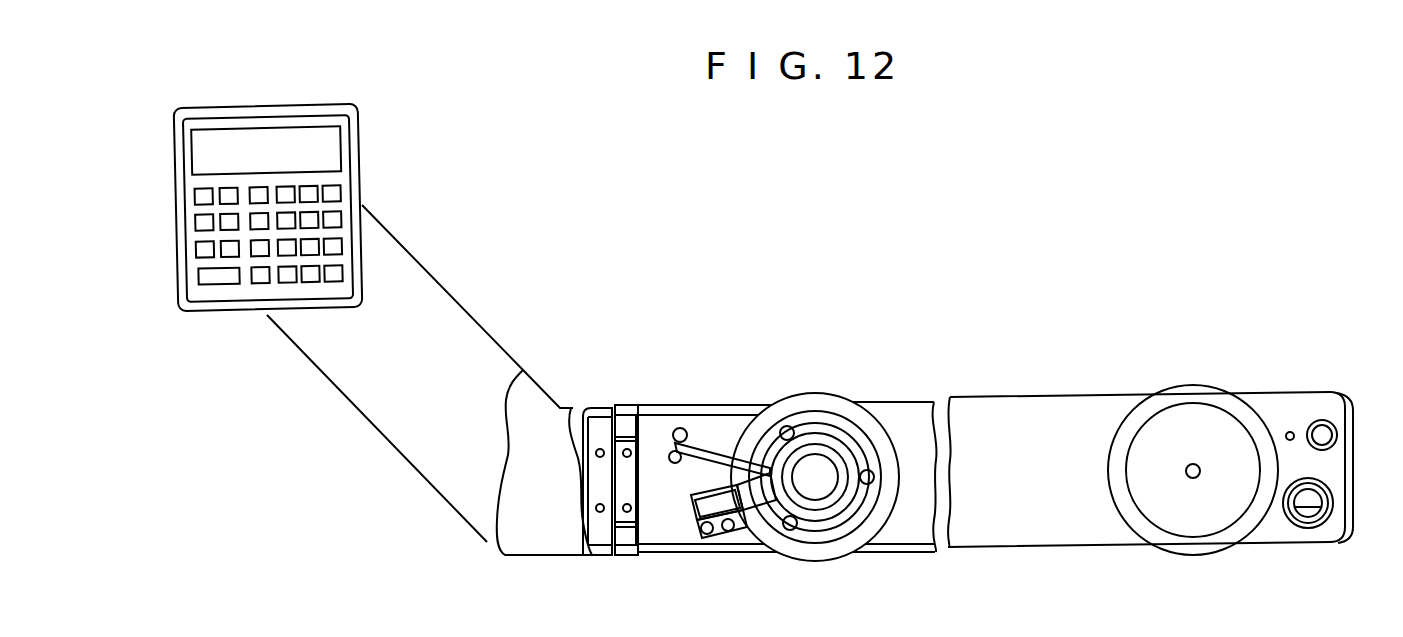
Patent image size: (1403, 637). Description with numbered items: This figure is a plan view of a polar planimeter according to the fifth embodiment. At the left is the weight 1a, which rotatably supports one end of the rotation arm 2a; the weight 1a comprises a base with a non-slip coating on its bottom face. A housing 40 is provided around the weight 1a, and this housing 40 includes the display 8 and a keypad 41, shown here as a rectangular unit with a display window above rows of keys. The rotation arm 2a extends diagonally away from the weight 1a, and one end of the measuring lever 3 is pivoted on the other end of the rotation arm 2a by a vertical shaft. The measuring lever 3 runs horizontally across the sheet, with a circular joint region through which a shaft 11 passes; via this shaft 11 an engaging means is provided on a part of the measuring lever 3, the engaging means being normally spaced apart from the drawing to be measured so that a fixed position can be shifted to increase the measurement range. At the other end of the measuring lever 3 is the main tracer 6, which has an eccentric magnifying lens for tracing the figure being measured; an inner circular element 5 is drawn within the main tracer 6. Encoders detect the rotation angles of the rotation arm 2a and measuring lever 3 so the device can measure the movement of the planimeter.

The weight 1a is at (360, 143).
The display 8 is at (280, 141).
The housing 40 is at (176, 303).
The keypad 41 is at (285, 278).
The rotation arm 2a is at (468, 307).
The measuring lever 3 is at (908, 401).
The shaft 11 is at (815, 465).
The wrist 5 is at (1173, 447).
The main tracer 6 is at (1215, 382).